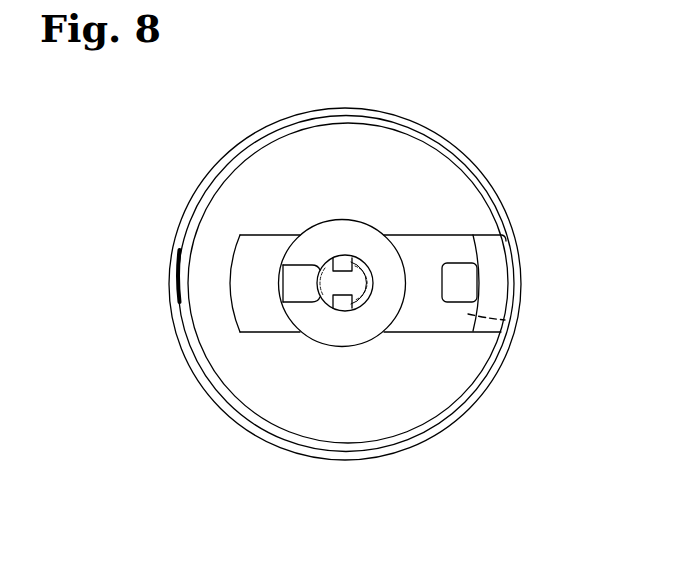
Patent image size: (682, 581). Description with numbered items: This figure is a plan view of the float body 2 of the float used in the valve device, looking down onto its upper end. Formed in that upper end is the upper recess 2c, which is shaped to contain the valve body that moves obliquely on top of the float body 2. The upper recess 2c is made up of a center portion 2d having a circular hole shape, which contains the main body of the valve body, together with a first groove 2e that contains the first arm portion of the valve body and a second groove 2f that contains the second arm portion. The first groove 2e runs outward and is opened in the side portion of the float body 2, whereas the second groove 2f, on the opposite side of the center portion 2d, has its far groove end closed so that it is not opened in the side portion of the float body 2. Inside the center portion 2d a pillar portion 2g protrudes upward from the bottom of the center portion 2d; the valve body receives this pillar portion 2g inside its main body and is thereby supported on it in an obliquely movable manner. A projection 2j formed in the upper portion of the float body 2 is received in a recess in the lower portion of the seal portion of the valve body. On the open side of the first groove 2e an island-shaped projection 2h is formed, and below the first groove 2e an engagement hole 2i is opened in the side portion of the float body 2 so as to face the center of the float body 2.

The float body 2 is at (480, 171).
The upper recess 2c is at (333, 232).
The center portion 2d is at (368, 233).
The first groove 2e is at (437, 238).
The second groove 2f is at (245, 272).
The pillar portion 2g is at (325, 297).
The projection 2j is at (342, 264).
The island-shaped projection 2h is at (462, 287).
The engagement hole 2i is at (505, 320).